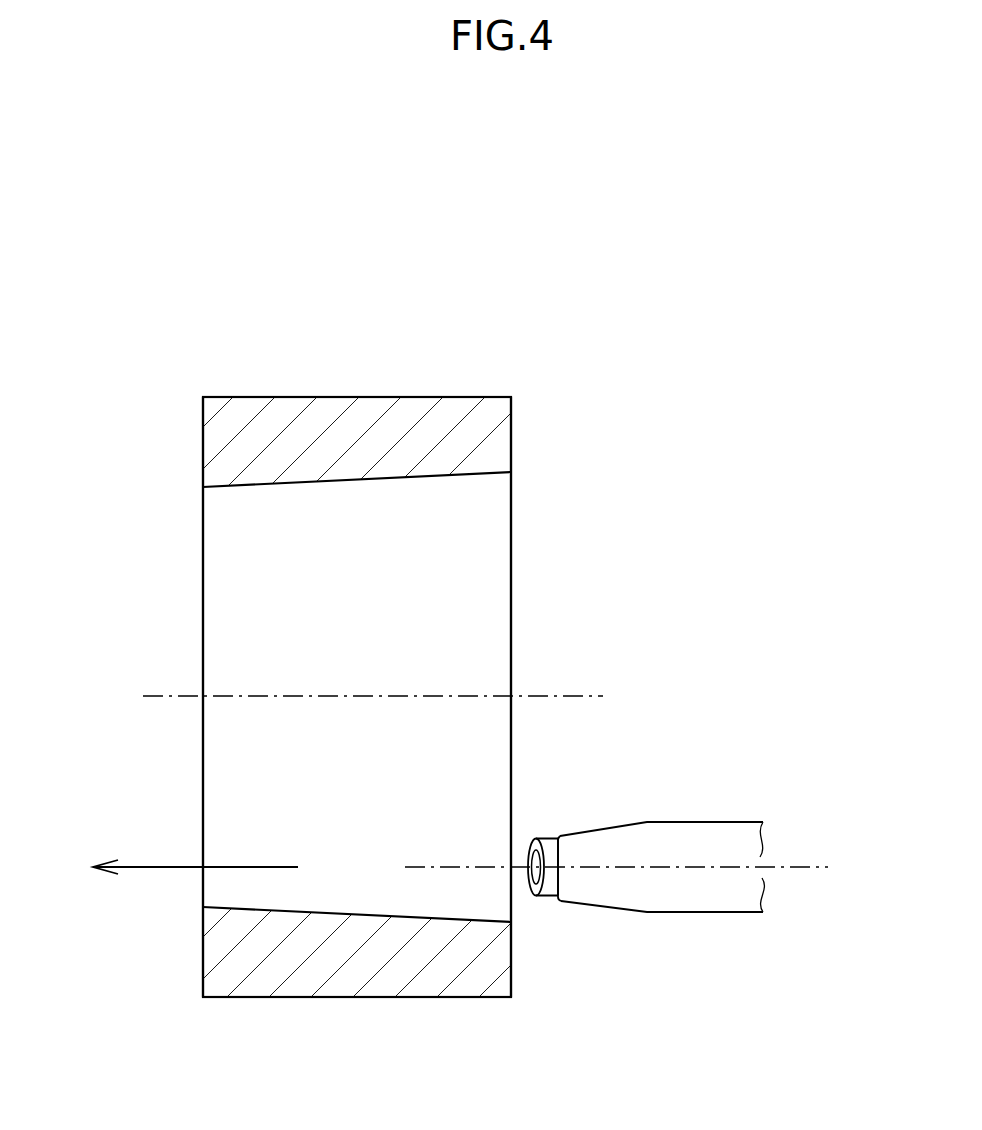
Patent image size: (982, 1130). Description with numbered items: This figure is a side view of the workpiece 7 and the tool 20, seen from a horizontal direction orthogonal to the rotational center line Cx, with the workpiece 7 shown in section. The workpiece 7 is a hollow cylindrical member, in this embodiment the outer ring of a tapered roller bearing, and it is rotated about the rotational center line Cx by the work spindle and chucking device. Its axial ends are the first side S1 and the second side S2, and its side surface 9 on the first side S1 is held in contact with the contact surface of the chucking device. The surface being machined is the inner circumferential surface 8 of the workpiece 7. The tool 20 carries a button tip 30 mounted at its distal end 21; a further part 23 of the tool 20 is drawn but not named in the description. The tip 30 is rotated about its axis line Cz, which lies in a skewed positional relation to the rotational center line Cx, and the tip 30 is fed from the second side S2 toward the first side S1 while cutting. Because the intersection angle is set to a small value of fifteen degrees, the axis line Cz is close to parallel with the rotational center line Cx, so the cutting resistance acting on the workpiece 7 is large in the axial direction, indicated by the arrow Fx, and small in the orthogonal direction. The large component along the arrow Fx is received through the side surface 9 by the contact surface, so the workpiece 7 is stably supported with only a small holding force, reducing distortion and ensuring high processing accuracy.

The workpiece 7 is at (412, 397).
The inner circumferential surface 8 is at (338, 913).
The side surface 9 is at (203, 447).
The tool 20 is at (672, 924).
The distal end 21 is at (574, 865).
The nozzle body 23 is at (680, 912).
The button tip 30 is at (543, 838).
The rotational center line Cx is at (358, 696).
The axis line Cz is at (700, 867).
The arrow Fx is at (150, 867).
The first side S1 is at (203, 958).
The second side S2 is at (511, 960).